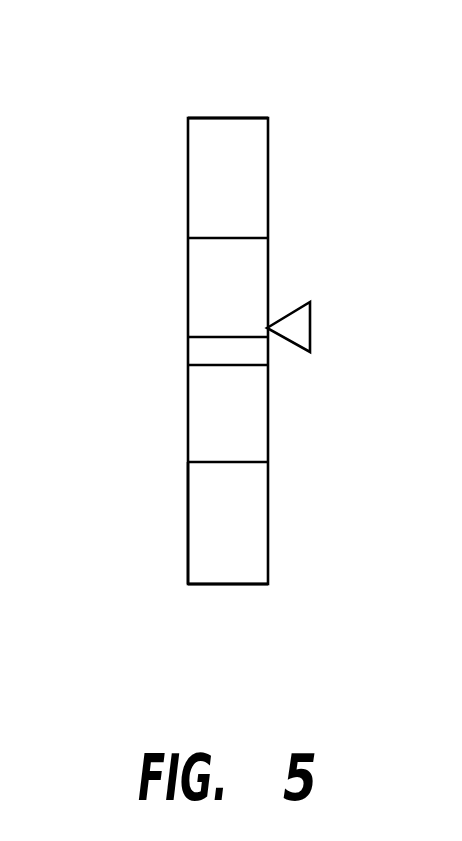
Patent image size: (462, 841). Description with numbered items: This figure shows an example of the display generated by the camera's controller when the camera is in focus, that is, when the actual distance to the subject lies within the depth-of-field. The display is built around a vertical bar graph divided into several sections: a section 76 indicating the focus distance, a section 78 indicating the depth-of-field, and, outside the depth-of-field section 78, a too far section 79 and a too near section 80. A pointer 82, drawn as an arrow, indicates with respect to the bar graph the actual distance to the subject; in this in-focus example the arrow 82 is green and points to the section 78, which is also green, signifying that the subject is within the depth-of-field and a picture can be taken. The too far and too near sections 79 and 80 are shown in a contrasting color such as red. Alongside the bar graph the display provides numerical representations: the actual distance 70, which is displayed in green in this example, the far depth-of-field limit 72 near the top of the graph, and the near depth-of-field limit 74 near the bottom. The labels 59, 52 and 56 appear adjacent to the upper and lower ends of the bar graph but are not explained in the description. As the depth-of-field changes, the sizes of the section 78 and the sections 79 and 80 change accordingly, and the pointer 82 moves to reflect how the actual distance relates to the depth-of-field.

The lower end of strip 52 is at (228, 608).
The lower region of strip 56 is at (229, 654).
The upper end of strip 59 is at (228, 97).
The actual distance 70 is at (252, 665).
The far depth-of-field limit 72 is at (248, 82).
The near depth-of-field limit 74 is at (253, 613).
The focus distance section 76 is at (188, 351).
The depth-of-field section 78 is at (180, 272).
The too far section 79 is at (268, 134).
The too near section 80 is at (188, 511).
The pointer 82 is at (310, 320).